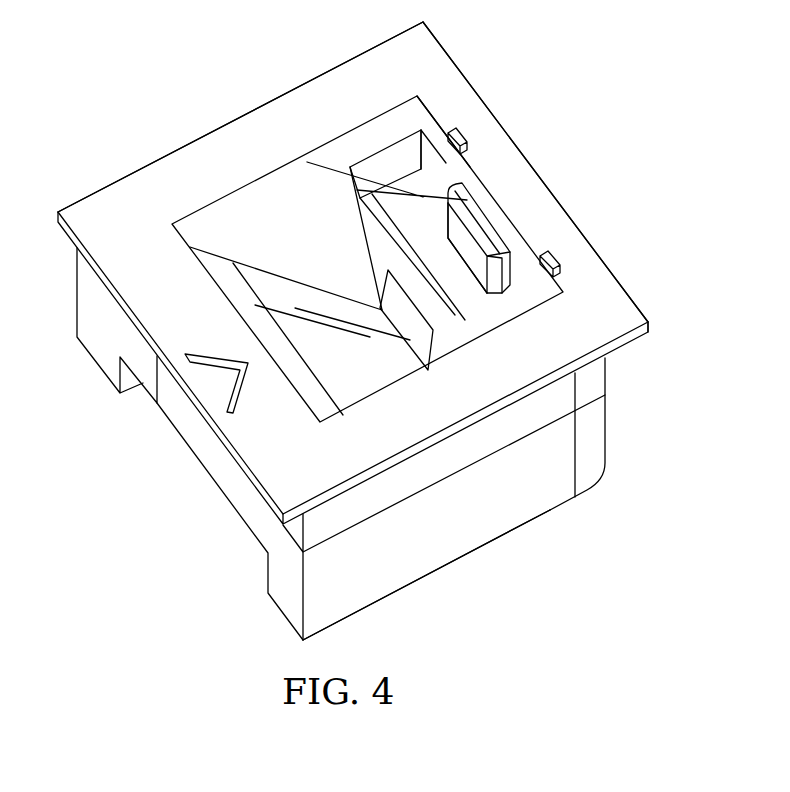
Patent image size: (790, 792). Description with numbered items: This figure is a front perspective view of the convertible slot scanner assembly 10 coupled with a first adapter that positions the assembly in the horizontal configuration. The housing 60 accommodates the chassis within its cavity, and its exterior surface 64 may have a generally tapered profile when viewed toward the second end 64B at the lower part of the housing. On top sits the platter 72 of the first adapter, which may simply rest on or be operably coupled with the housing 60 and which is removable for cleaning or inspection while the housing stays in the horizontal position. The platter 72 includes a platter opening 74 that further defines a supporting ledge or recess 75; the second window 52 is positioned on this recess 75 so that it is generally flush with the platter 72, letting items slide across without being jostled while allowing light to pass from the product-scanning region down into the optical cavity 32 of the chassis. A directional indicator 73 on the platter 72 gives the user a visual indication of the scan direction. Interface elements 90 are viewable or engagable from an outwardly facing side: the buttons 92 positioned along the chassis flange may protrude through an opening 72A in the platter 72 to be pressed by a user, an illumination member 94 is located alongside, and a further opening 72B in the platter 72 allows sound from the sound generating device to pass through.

The convertible slot scanner assembly 10 is at (636, 492).
The optical cavity 32 is at (352, 345).
The second window 52 is at (225, 212).
The housing 60 is at (588, 437).
The exterior surface 64 is at (532, 525).
The second end 64B is at (452, 582).
The platter 72 is at (622, 317).
The opening 72A is at (558, 262).
The opening 72B is at (241, 118).
The directional indicator 73 is at (200, 358).
The platter opening 74 is at (440, 111).
The supporting ledge or recess 75 is at (492, 200).
The interface elements 90 is at (528, 139).
The buttons 92 is at (464, 148).
The illumination member 94 is at (500, 242).